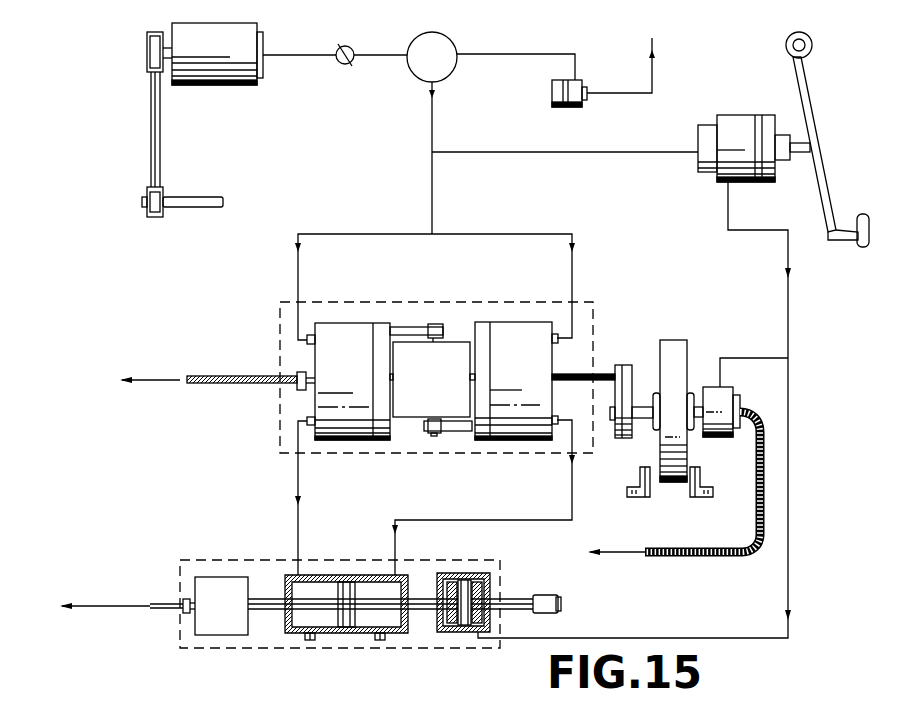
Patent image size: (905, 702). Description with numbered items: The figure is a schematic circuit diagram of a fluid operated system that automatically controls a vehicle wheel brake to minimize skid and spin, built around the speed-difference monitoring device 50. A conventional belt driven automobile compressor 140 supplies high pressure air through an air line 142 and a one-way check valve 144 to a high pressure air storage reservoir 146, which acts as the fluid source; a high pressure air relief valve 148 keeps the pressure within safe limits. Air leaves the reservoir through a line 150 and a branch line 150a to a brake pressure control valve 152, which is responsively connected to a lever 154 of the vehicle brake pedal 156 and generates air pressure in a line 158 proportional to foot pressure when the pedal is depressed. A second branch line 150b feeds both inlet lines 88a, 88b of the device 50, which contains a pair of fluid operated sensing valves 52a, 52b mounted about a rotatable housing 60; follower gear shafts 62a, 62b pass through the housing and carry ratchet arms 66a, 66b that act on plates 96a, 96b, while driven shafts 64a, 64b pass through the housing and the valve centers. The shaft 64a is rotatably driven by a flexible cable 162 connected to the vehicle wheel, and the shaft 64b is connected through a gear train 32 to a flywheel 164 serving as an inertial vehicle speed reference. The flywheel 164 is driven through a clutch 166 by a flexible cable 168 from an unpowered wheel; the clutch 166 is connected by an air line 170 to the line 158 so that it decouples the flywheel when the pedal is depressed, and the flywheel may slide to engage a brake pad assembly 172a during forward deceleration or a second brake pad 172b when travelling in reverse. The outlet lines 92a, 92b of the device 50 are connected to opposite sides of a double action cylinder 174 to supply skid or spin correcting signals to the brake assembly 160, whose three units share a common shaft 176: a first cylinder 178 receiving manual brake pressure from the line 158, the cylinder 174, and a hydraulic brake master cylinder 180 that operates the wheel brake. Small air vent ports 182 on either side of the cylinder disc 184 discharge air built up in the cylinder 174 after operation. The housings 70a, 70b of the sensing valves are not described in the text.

The belt driven automobile compressor 140 is at (243, 24).
The air line 142 is at (300, 58).
The one-way check valve 144 is at (352, 48).
The high pressure air storage reservoir 146 is at (456, 45).
The high pressure air relief valve 148 is at (552, 93).
The line 150 is at (437, 135).
The branch line 150a is at (582, 152).
The branch line 150b is at (437, 200).
The brake pressure control valve 152 is at (712, 181).
The lever 154 is at (822, 147).
The vehicle brake pedal 156 is at (858, 246).
The line 158 is at (792, 338).
The inlet line 88a is at (350, 234).
The inlet line 88b is at (500, 234).
The outlet line 92a is at (298, 472).
The outlet line 92b is at (520, 520).
The device 50 is at (275, 438).
The fluid operated sensing valve 52a is at (346, 318).
The fluid operated sensing valve 52b is at (513, 333).
The rotatable housing 60 is at (445, 393).
The shaft 62a is at (432, 324).
The shaft 62b is at (431, 436).
The ratchet arm 66a is at (405, 326).
The ratchet arm 66b is at (455, 432).
The plate 96a is at (378, 441).
The plate 96b is at (487, 322).
The driven shaft 64a is at (300, 372).
The driven shaft 64b is at (575, 376).
The motor housing 70a is at (318, 400).
The motor housing 70b is at (540, 360).
The flexible cable 162 is at (193, 385).
The gear train 32 is at (622, 365).
The flywheel 164 is at (672, 340).
The clutch 166 is at (725, 390).
The flexible cable 168 is at (762, 486).
The air line 170 is at (756, 358).
The brake pad assembly 172a is at (692, 498).
The second brake pad 172b is at (642, 498).
The assembly 160 is at (224, 562).
The double action cylinder 174 is at (288, 570).
The common shaft 176 is at (433, 612).
The first cylinder 178 is at (462, 574).
The hydraulic brake master cylinder 180 is at (218, 636).
The air vent port 182 is at (380, 641).
The cylinder disc 184 is at (340, 577).